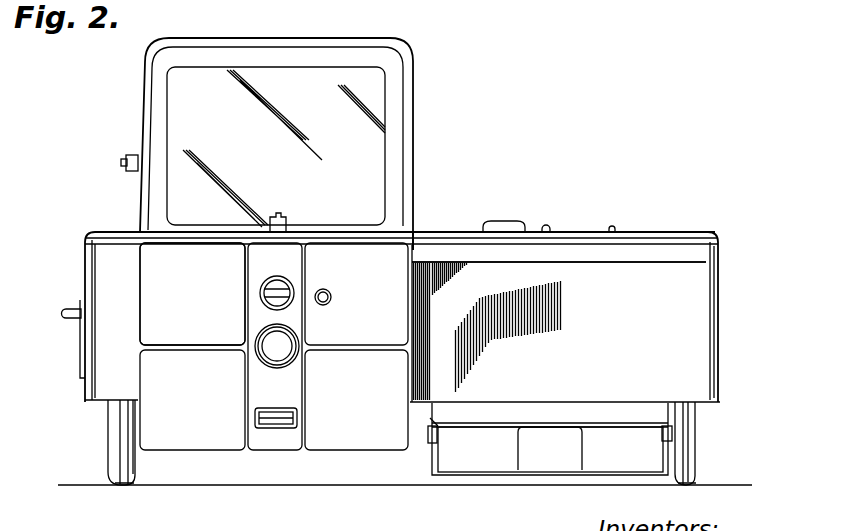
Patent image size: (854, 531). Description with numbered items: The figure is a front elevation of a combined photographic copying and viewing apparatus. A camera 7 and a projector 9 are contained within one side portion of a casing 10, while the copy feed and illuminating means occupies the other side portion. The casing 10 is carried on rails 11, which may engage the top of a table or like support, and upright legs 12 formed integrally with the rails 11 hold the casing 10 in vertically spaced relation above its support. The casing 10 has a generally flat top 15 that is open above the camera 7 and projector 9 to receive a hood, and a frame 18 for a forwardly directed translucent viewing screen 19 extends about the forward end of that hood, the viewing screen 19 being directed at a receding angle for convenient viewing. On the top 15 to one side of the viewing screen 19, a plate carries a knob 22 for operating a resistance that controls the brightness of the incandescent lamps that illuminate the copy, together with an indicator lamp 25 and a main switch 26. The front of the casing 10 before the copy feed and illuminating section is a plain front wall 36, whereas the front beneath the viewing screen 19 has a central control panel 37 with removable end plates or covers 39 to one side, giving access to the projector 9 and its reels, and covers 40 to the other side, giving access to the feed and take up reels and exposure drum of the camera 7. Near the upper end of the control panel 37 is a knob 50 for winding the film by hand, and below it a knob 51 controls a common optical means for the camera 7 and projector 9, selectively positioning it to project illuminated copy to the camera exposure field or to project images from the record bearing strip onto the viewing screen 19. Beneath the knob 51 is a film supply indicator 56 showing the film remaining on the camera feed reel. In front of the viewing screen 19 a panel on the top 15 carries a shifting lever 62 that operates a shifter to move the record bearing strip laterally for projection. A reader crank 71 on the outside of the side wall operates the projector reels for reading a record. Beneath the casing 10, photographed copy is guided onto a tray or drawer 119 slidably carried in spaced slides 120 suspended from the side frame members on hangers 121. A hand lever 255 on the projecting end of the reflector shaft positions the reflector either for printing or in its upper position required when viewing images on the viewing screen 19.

The camera 7 is at (388, 331).
The projector 9 is at (160, 300).
The casing 10 is at (722, 320).
The rails 11 is at (130, 481).
The upright legs 12 is at (112, 425).
The top 15 is at (425, 232).
The frame 18 is at (395, 133).
The viewing screen 19 is at (362, 90).
The knob 22 is at (505, 221).
The indicator lamp 25 is at (547, 228).
The main switch 26 is at (612, 228).
The front wall 36 is at (615, 285).
The central control panel 37 is at (283, 432).
The removable end plates or covers 39 is at (178, 265).
The removable end plates or covers 40 is at (350, 248).
The knob 50 is at (278, 292).
The knob 51 is at (282, 338).
The film supply indicator 56 is at (278, 418).
The shifting lever 62 is at (282, 216).
The reader crank 71 is at (72, 308).
The tray or drawer 119 is at (563, 455).
The slides 120 is at (433, 444).
The hangers 121 is at (432, 428).
The hand lever 255 is at (120, 158).